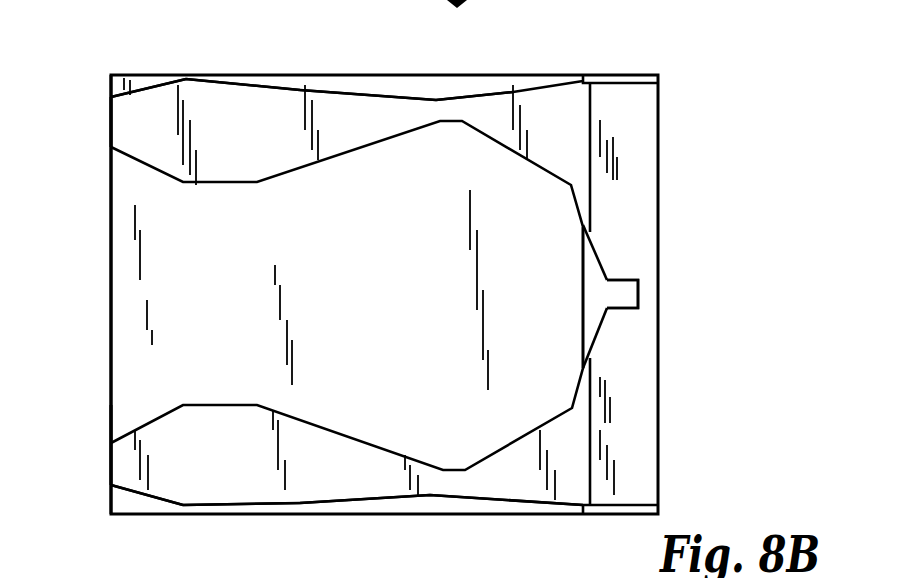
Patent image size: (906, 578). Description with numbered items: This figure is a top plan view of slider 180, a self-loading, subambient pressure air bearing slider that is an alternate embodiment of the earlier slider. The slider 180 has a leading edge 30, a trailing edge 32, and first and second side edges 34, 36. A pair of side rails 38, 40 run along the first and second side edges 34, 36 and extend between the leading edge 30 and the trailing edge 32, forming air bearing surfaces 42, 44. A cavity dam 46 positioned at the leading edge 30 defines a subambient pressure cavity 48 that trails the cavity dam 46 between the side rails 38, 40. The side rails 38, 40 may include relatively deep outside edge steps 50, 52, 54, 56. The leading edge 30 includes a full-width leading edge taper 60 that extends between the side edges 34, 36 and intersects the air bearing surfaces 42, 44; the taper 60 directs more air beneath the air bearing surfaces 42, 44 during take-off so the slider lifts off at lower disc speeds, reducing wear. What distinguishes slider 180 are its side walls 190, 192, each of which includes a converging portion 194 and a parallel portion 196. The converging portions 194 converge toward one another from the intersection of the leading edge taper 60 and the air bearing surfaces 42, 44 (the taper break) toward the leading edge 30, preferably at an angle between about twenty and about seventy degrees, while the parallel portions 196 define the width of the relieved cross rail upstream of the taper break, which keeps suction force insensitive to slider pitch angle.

The leading edge 30 is at (658, 103).
The trailing edge 32 is at (111, 235).
The first side edge 34 is at (428, 72).
The second side edge 36 is at (360, 518).
The side rail 38 is at (109, 450).
The side rail 40 is at (109, 117).
The air bearing surface 42 is at (247, 477).
The air bearing surface 44 is at (245, 113).
The cavity dam 46 is at (643, 296).
The subambient pressure cavity 48 is at (335, 311).
The outside edge step 50 is at (457, 503).
The outside edge step 52 is at (128, 500).
The outside edge step 54 is at (378, 80).
The outside edge step 56 is at (138, 78).
The leading edge taper 60 is at (642, 477).
The slider 180 is at (612, 68).
The side wall 190 is at (603, 255).
The side wall 192 is at (602, 336).
The converging portion 194 is at (595, 235).
The parallel portion 196 is at (625, 280).